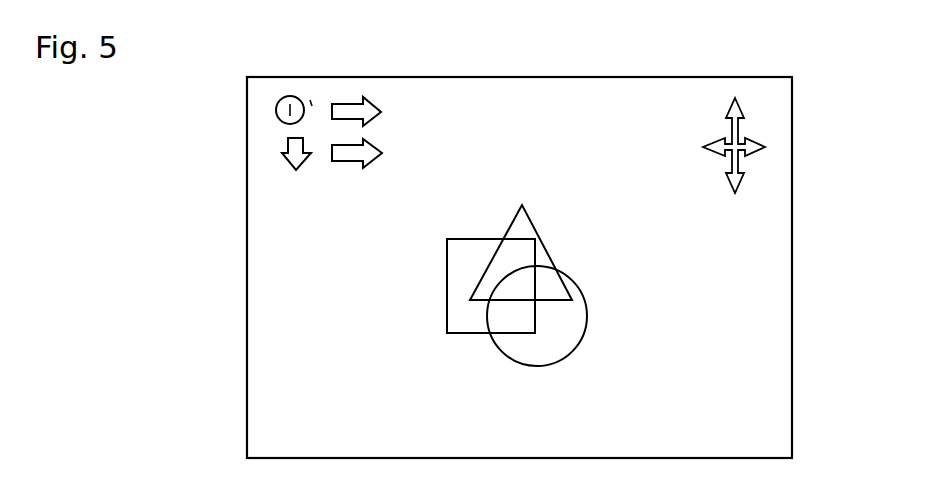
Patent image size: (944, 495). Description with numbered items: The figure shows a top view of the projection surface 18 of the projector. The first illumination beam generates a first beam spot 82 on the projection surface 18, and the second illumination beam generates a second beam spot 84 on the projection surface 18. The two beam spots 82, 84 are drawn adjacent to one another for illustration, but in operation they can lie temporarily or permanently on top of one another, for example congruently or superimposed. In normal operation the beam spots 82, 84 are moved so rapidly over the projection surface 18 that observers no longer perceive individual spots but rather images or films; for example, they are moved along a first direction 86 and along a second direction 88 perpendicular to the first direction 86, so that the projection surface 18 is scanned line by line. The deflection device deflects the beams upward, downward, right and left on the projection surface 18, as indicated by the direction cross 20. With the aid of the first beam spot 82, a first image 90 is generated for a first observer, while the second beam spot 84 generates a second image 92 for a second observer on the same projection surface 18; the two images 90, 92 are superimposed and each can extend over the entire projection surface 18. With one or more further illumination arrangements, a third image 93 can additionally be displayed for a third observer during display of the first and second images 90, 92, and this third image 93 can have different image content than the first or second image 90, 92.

The projection surface 18 is at (792, 268).
The direction cross 20 is at (735, 195).
The first beam spot 82 is at (278, 113).
The second beam spot 84 is at (313, 97).
The first direction 86 is at (367, 97).
The second direction 88 is at (284, 150).
The first image 90 is at (447, 285).
The second image 92 is at (503, 352).
The third image 93 is at (547, 253).